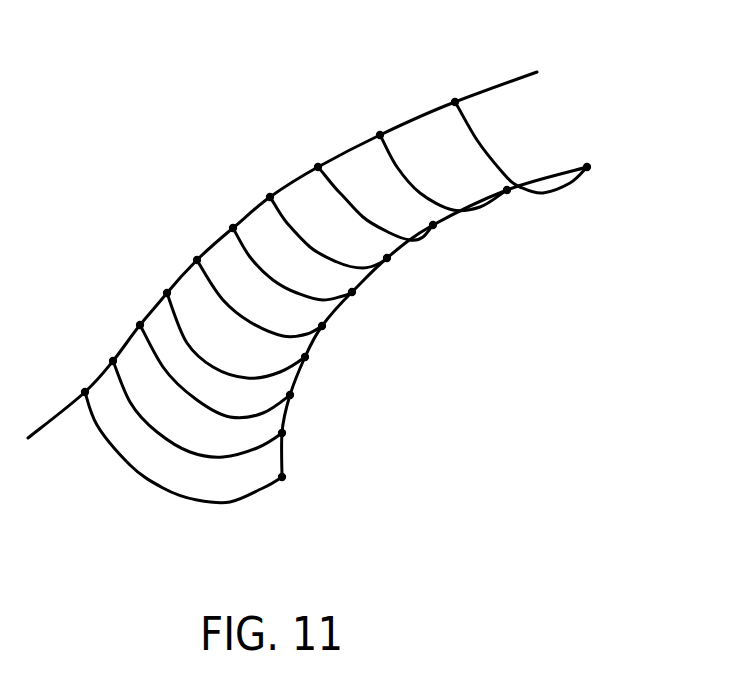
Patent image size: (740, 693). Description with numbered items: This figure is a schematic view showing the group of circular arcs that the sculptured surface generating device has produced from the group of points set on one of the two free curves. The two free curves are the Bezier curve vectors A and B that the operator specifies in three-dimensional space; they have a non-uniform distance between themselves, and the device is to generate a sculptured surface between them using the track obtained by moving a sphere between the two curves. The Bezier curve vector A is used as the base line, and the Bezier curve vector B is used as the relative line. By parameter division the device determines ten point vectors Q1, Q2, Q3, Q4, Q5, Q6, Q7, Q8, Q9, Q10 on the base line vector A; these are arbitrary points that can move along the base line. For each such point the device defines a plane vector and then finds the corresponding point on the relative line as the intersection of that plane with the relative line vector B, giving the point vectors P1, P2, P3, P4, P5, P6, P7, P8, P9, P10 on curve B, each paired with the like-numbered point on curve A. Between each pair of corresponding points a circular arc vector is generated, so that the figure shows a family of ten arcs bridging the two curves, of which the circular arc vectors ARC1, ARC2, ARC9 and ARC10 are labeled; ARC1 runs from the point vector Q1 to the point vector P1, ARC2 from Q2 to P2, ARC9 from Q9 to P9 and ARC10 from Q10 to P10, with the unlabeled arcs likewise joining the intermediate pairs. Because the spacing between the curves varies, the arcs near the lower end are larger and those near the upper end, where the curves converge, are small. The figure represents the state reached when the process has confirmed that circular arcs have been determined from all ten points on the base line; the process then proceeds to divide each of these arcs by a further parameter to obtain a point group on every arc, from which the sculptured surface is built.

The Bezier curve vector A is at (512, 78).
The Bezier curve vector B is at (543, 178).
The point vector Q1 is at (85, 392).
The point vector Q2 is at (113, 361).
The point vector Q3 is at (140, 325).
The point vector Q4 is at (167, 293).
The point vector Q5 is at (197, 260).
The point vector Q6 is at (233, 228).
The point vector Q7 is at (270, 197).
The point vector Q8 is at (318, 167).
The point vector Q9 is at (380, 135).
The point vector Q10 is at (455, 102).
The point vector P1 is at (282, 477).
The point vector P2 is at (282, 433).
The point vector P3 is at (290, 395).
The point vector P4 is at (305, 357).
The point vector P5 is at (322, 326).
The point vector P6 is at (352, 292).
The point vector P7 is at (387, 258).
The point vector P8 is at (433, 225).
The point vector P9 is at (507, 190).
The point vector P10 is at (587, 167).
The circular arc vector ARC1 is at (130, 467).
The circular arc vector ARC2 is at (130, 403).
The circular arc vector ARC9 is at (477, 215).
The circular arc vector ARC10 is at (542, 197).